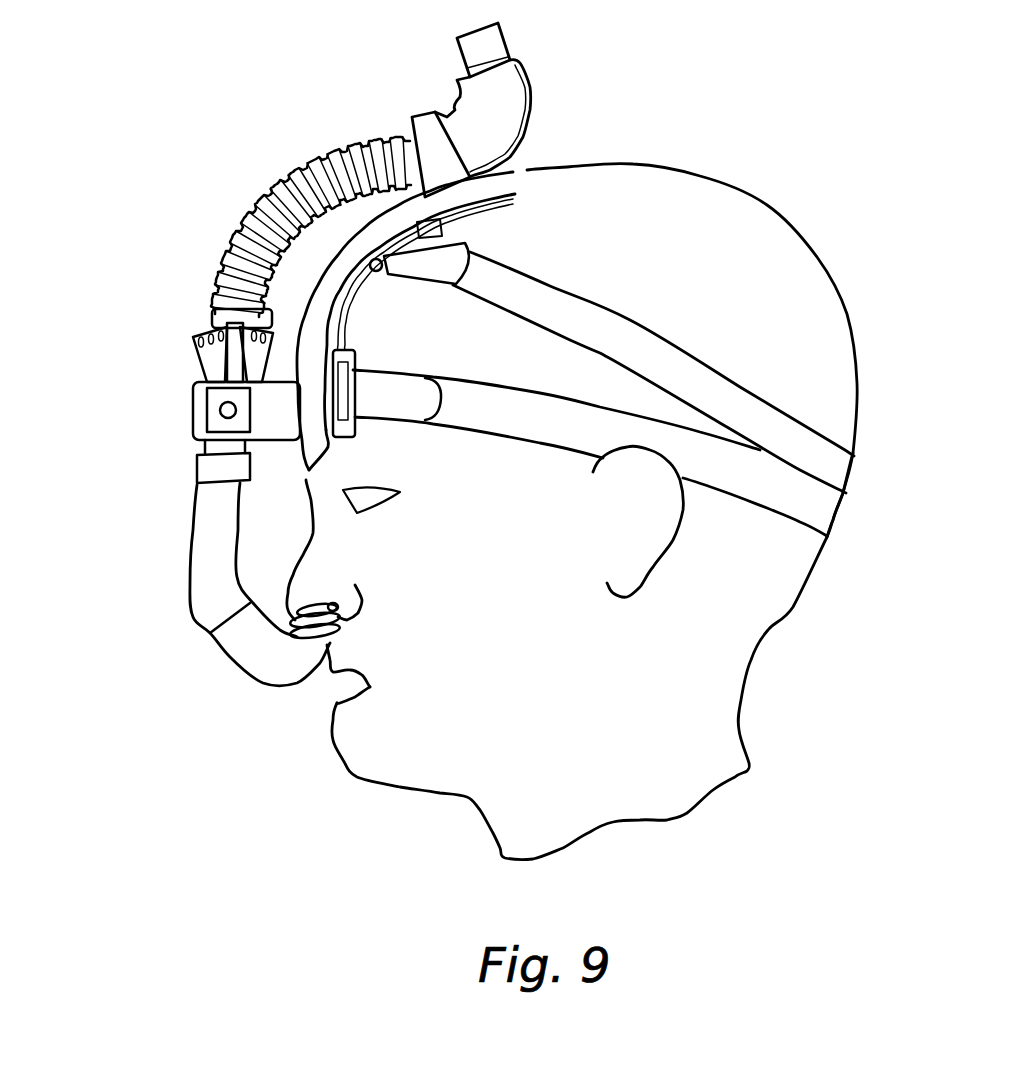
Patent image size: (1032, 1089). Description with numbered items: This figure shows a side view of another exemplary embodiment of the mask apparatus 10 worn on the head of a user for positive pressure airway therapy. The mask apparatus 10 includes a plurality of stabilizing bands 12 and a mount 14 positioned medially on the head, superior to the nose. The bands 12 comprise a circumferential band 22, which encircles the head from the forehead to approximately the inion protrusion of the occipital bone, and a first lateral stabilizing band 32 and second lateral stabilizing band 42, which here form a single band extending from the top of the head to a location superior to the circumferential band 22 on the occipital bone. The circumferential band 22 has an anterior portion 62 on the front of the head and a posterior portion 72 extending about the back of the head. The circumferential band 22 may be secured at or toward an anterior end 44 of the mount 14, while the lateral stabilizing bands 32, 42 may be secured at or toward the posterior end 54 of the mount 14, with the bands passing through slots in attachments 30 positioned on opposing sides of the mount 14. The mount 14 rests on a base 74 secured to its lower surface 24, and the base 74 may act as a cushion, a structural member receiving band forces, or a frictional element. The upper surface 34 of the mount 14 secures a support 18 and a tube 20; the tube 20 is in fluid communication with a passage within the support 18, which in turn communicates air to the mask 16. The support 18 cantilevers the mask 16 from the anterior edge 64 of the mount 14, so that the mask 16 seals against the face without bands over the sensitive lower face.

The mask apparatus 10 is at (197, 273).
The stabilizing bands 12 is at (589, 303).
The mount 14 is at (328, 364).
The mask 16 is at (282, 690).
The support 18 is at (205, 518).
The tube 20 is at (233, 250).
The circumferential band 22 is at (713, 470).
The lower surface 24 is at (465, 206).
The attachments 30 is at (377, 280).
The first lateral stabilizing band 32 is at (663, 358).
The second lateral stabilizing band 42 is at (653, 372).
The upper surface 34 is at (320, 307).
The anterior end 44 is at (303, 447).
The posterior end 54 is at (523, 165).
The anterior portion 62 is at (462, 398).
The anterior edge 64 is at (318, 480).
The posterior portion 72 is at (833, 522).
The base 74 is at (340, 320).